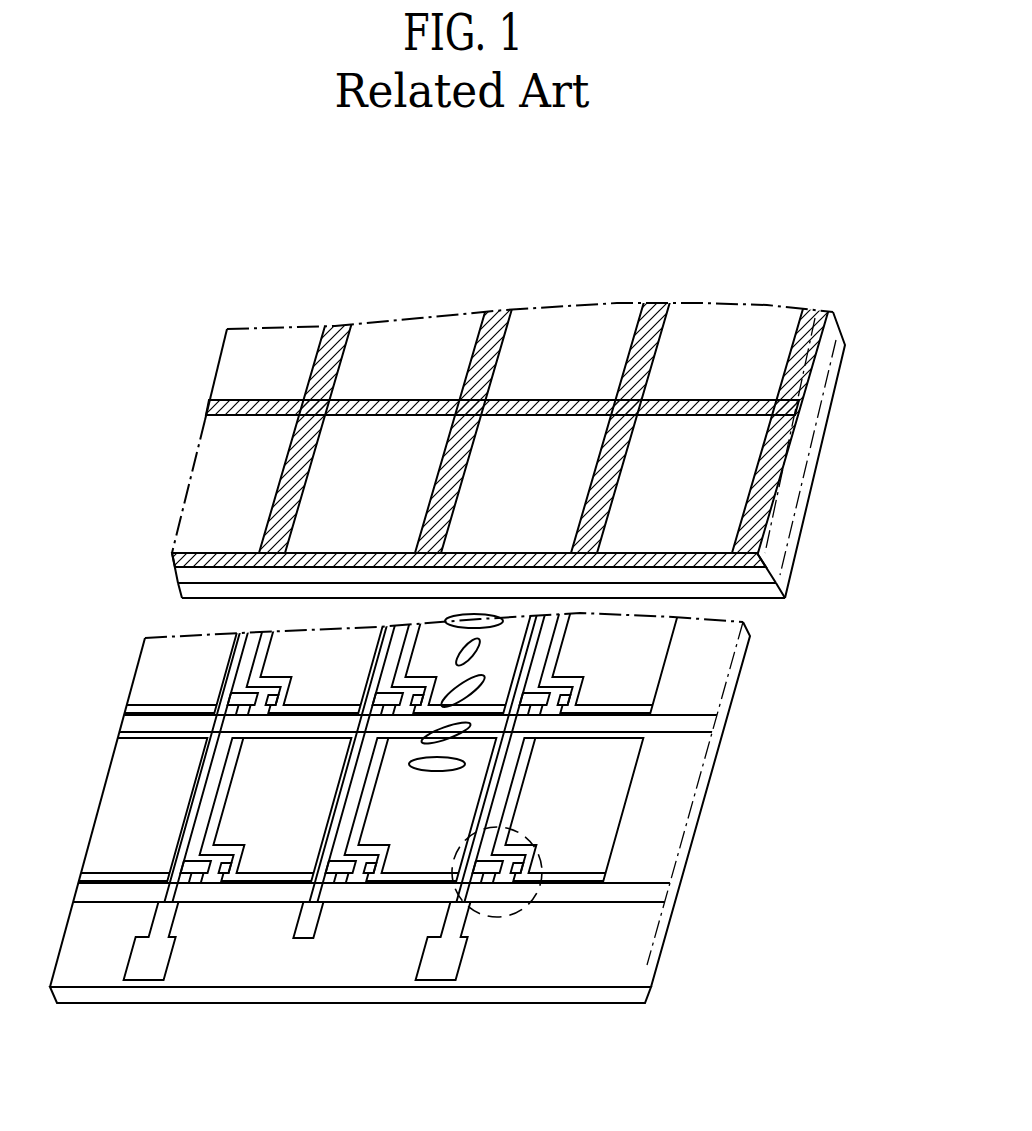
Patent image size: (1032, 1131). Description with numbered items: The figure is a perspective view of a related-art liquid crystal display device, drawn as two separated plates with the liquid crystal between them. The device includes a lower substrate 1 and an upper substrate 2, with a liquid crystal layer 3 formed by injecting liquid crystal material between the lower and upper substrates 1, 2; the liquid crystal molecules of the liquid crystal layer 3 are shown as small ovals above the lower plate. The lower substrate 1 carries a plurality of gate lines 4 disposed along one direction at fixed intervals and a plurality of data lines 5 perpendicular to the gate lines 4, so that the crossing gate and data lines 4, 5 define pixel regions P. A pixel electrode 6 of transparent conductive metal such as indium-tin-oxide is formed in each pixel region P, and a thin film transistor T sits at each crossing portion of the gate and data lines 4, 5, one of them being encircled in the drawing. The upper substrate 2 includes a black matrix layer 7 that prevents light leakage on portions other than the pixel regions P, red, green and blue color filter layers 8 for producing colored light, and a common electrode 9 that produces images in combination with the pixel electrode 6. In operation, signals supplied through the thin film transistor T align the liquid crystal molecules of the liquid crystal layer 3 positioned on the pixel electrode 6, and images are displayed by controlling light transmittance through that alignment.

The lower substrate 1 is at (600, 997).
The upper substrate 2 is at (765, 572).
The liquid crystal layer 3 is at (487, 680).
The gate lines 4 is at (613, 895).
The data lines 5 is at (453, 922).
The pixel electrode 6 is at (620, 825).
The black matrix layer 7 is at (810, 404).
The color filter layers 8 is at (738, 485).
The common electrode 9 is at (767, 590).
The pixel region P is at (662, 773).
The thin film transistor T is at (500, 917).